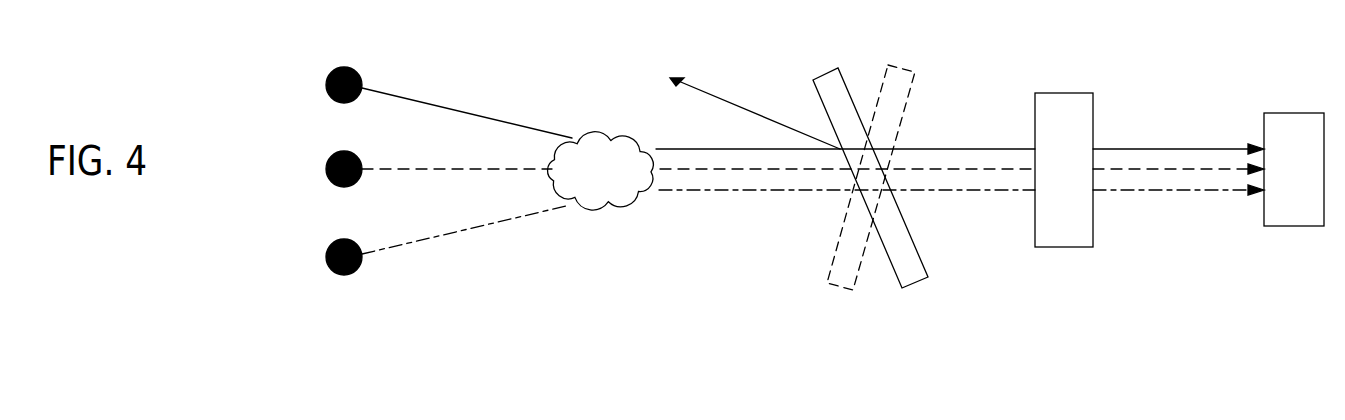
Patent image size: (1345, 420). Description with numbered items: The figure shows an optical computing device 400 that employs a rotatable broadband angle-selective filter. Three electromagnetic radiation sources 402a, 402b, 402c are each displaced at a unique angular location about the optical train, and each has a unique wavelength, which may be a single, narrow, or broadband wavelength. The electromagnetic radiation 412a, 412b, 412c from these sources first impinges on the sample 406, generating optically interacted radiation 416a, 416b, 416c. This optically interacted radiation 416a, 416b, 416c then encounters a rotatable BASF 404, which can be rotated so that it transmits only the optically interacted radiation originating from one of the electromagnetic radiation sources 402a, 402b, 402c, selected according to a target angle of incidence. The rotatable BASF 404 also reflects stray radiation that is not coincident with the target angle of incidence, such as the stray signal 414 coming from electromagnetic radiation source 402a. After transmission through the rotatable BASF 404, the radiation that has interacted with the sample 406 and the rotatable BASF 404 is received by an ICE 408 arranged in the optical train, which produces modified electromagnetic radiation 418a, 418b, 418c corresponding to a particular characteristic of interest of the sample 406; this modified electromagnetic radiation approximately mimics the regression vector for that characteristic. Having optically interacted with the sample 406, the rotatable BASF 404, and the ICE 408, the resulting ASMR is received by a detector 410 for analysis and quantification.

The optical computing device 400 is at (917, 40).
The electromagnetic radiation source 402a is at (326, 85).
The electromagnetic radiation source 402b is at (326, 169).
The electromagnetic radiation source 402c is at (326, 255).
The rotatable BASF 404 is at (917, 287).
The sample 406 is at (587, 182).
The ICE 408 is at (1049, 182).
The detector 410 is at (1279, 182).
The electromagnetic radiation 412a is at (388, 92).
The electromagnetic radiation 412b is at (373, 167).
The electromagnetic radiation 412c is at (385, 243).
The stray signal 414 is at (735, 103).
The optically interacted radiation 416a is at (682, 153).
The optically interacted radiation 416b is at (743, 173).
The optically interacted radiation 416c is at (797, 192).
The modified electromagnetic radiation 418a is at (1187, 148).
The modified electromagnetic radiation 418b is at (1153, 170).
The modified electromagnetic radiation 418c is at (1223, 192).